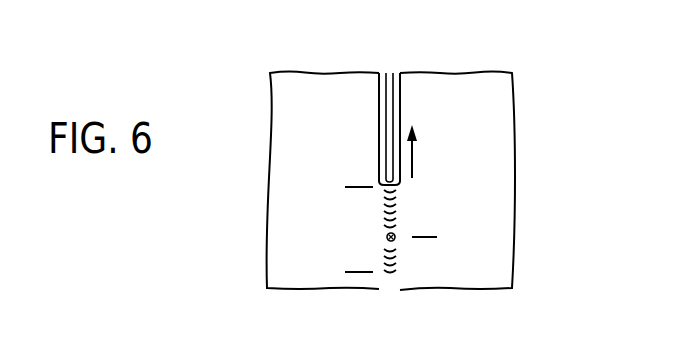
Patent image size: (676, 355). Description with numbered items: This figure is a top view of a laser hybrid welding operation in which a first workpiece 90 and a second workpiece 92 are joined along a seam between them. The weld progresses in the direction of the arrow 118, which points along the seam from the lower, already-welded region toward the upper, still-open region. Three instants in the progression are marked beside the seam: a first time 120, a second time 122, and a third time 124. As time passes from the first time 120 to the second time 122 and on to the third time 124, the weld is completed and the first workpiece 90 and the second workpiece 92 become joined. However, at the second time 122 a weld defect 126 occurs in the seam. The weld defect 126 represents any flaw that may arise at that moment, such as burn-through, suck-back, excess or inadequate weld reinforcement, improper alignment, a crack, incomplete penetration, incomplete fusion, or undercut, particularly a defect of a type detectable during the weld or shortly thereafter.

The first workpiece 90 is at (287, 82).
The second workpiece 92 is at (498, 98).
The arrow 118 is at (412, 160).
The first time 120 is at (312, 267).
The second time 122 is at (473, 232).
The third time 124 is at (313, 185).
The weld defect 126 is at (394, 240).